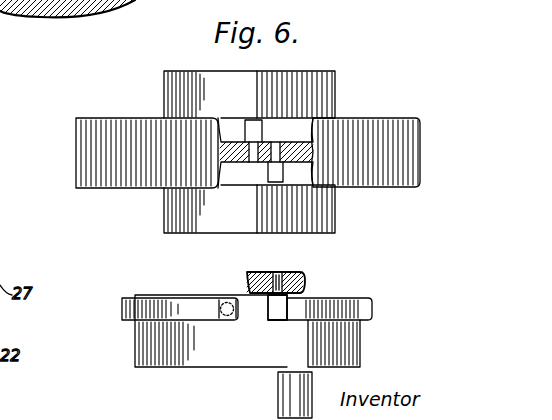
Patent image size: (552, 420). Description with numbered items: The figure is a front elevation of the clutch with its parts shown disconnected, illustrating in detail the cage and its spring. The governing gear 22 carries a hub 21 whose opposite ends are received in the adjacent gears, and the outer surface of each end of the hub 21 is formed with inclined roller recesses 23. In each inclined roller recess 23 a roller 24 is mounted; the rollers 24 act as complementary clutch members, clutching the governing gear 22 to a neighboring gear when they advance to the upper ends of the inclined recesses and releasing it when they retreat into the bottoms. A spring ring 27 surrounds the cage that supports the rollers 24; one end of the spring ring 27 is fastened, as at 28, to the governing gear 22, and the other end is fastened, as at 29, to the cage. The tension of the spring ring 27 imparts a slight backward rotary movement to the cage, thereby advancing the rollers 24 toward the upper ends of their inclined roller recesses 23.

The hub 21 is at (180, 75).
The governing gear 22 is at (82, 118).
The inclined roller recess 23 is at (264, 85).
The roller 24 is at (292, 403).
The spring ring 27 is at (128, 299).
The fastening of spring ring to governing gear 28 is at (247, 127).
The fastening of spring ring to cage 29 is at (223, 322).